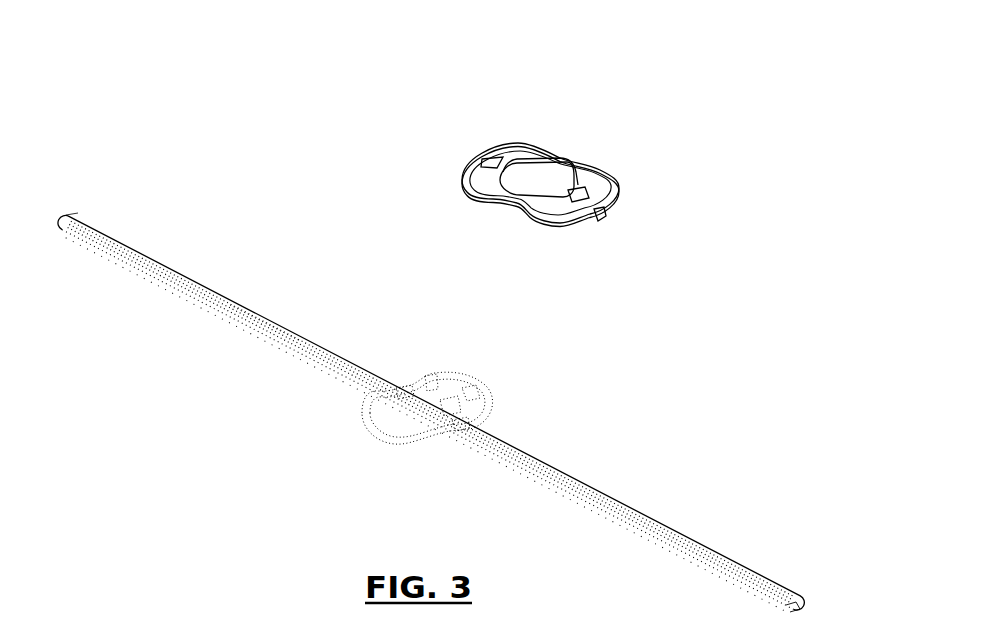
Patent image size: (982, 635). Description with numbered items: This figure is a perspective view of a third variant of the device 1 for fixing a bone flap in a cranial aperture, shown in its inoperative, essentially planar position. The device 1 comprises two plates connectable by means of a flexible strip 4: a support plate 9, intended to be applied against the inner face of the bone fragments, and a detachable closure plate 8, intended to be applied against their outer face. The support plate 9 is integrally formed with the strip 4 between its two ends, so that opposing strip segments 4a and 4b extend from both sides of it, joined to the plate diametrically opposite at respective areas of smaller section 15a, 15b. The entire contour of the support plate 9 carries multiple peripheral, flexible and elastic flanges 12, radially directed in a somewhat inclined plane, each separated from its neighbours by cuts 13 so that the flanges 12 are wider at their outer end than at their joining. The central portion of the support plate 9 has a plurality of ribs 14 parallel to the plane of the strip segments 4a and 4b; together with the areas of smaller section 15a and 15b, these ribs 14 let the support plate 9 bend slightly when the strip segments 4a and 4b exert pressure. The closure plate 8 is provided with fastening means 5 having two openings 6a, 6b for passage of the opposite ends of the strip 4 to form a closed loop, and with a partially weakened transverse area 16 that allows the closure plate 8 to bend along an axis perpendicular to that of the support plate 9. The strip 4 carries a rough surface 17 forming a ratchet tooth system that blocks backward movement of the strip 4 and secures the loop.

The device 1 is at (447, 318).
The strip 4 is at (447, 363).
The strip segment 4a is at (142, 258).
The strip segment 4b is at (730, 558).
The fastening means 5 is at (537, 154).
The opening 6a is at (490, 159).
The opening 6b is at (583, 193).
The closure plate 8 is at (518, 148).
The support plate 9 is at (483, 415).
The flange 12 is at (470, 387).
The cut 13 is at (436, 392).
The rib 14 is at (450, 409).
The area of smaller section 15a is at (401, 395).
The area of smaller section 15b is at (462, 427).
The partially weakened transverse area 16 is at (517, 192).
The rough surface 17 is at (270, 318).